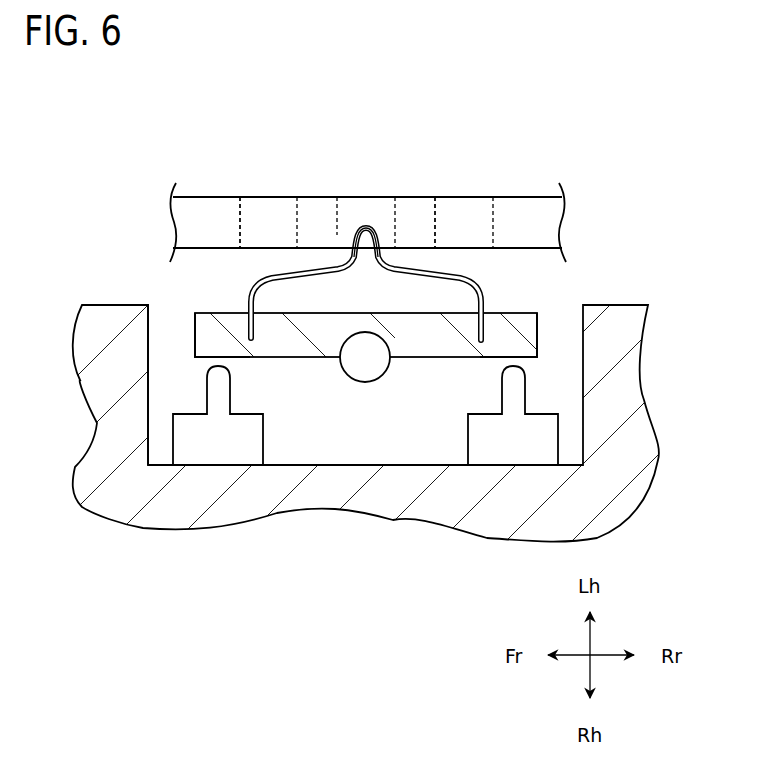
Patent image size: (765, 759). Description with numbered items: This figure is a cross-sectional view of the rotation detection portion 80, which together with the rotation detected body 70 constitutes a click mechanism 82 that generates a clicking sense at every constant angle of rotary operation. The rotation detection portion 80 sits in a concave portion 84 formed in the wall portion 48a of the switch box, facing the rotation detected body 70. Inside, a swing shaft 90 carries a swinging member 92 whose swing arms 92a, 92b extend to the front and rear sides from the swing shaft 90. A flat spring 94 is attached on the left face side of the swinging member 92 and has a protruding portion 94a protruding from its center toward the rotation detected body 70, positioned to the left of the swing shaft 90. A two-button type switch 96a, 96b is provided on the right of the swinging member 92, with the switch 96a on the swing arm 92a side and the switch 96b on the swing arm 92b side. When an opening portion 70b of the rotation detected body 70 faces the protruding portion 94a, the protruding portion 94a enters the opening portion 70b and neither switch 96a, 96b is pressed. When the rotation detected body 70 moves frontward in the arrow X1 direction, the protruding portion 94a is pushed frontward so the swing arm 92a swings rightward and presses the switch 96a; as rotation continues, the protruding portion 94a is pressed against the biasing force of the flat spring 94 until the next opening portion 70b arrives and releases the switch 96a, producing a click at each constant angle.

The click mechanism 82 is at (506, 133).
The rotation detection portion 80 is at (553, 338).
The concave portion 84 is at (372, 465).
The wall portion 48a is at (108, 318).
The rotation detected body 70 is at (505, 197).
The opening portion 70b is at (247, 212).
The arrow X1 direction X1 is at (353, 173).
The flat spring 94 is at (265, 288).
The protruding portion 94a is at (360, 226).
The swinging member 92 is at (315, 358).
The swing arm 92a is at (212, 325).
The swing arm 92b is at (505, 325).
The swing shaft 90 is at (365, 382).
The switch 96a is at (250, 447).
The switch 96b is at (482, 447).